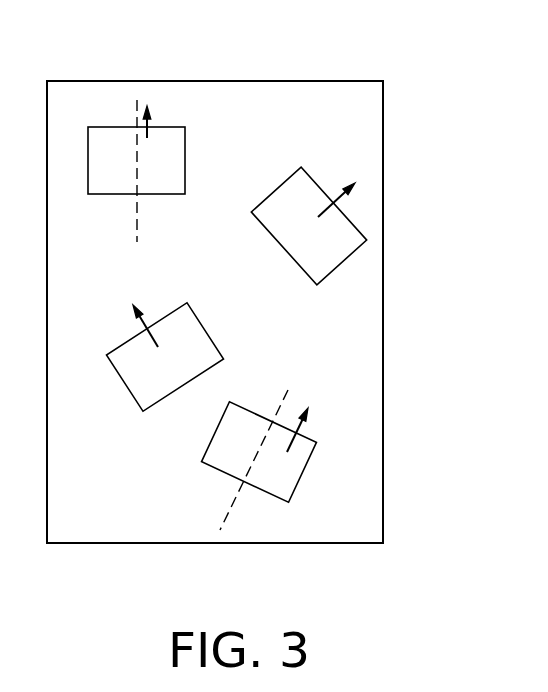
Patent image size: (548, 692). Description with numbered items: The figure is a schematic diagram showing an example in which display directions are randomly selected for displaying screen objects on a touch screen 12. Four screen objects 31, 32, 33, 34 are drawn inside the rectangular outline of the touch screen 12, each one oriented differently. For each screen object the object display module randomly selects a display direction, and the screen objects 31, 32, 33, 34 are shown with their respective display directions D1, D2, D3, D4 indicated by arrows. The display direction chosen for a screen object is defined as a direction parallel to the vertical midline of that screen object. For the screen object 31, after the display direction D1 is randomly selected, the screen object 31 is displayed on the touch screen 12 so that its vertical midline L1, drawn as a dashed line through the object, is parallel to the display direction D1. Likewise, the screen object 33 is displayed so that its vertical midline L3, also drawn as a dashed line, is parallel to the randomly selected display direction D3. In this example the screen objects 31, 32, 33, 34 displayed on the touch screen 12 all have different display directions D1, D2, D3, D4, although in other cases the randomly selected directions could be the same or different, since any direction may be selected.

The touch screen 12 is at (383, 140).
The screen object 31 is at (136, 160).
The screen object 32 is at (164, 357).
The screen object 33 is at (259, 452).
The screen object 34 is at (308, 226).
The vertical midline L1 is at (137, 122).
The vertical midline L3 is at (282, 407).
The display direction D1 is at (165, 115).
The display direction D2 is at (152, 309).
The display direction D3 is at (319, 424).
The display direction D4 is at (336, 183).